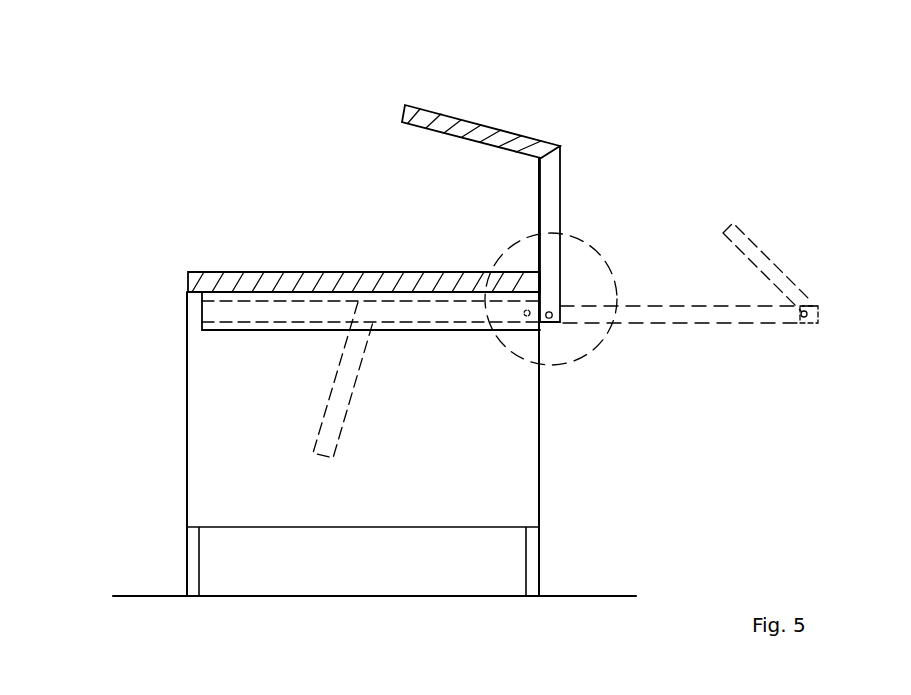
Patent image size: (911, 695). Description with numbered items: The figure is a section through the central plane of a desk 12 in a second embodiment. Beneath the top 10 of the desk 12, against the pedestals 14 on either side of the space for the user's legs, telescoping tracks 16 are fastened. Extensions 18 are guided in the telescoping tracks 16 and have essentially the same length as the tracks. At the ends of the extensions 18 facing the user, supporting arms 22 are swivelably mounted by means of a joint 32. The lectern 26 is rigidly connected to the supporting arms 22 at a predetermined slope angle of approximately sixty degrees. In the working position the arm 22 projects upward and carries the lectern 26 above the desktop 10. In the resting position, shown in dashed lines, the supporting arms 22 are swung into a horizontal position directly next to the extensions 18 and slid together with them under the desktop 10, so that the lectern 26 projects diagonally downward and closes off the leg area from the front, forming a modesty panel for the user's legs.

The top 10 is at (292, 283).
The desk 12 is at (168, 412).
The pedestal 14 is at (212, 477).
The telescoping track 16 is at (288, 327).
The extension 18 is at (675, 313).
The supporting arm 22 is at (555, 213).
The lectern 26 is at (483, 137).
The joint 32 is at (552, 323).